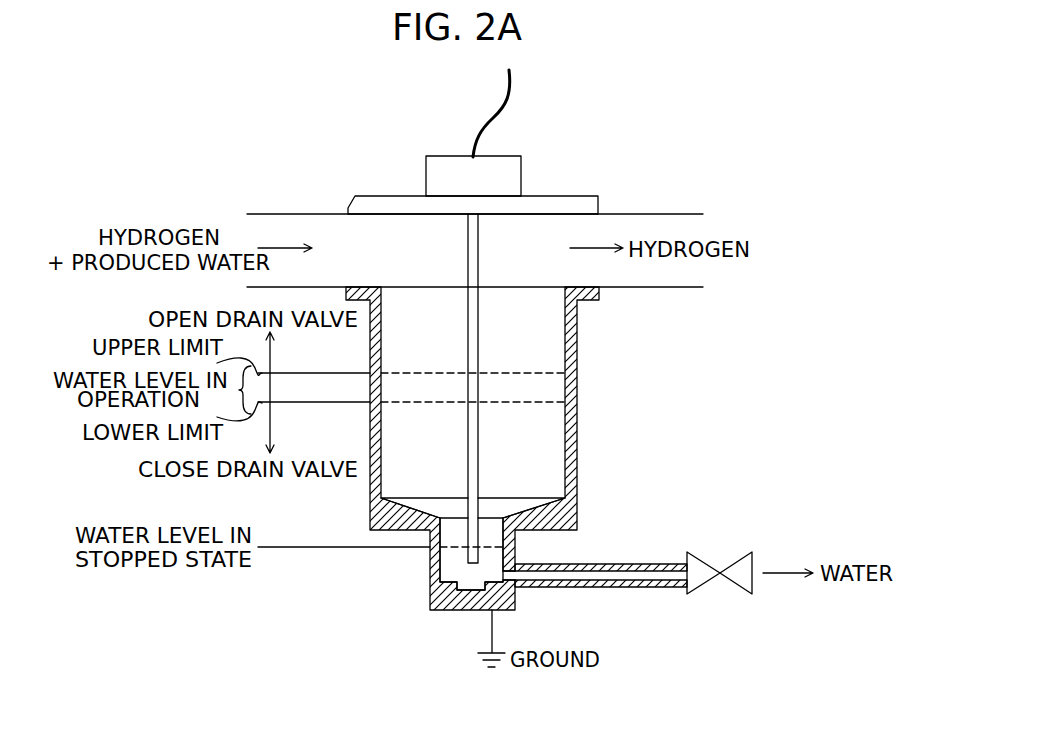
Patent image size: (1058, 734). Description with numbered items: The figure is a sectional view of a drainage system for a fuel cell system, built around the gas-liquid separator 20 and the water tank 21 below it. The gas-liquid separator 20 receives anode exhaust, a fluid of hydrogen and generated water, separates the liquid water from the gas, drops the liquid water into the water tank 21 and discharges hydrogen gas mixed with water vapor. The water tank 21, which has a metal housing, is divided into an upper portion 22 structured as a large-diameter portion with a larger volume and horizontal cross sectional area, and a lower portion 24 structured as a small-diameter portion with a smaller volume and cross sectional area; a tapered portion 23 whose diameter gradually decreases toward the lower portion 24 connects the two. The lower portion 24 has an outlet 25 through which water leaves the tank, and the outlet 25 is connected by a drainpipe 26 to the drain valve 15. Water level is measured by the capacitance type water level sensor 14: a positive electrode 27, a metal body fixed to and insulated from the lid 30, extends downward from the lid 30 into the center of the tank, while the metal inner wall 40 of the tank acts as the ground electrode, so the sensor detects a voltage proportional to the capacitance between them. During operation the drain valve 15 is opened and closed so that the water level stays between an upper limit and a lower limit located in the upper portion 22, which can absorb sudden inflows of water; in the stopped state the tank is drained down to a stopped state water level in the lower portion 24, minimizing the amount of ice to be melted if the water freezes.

The water level sensor 14 is at (524, 178).
The drain valve 15 is at (756, 588).
The gas-liquid separator 20 is at (385, 231).
The water tank 21 is at (580, 347).
The upper portion 22 is at (583, 443).
The tapered portion 23 is at (563, 496).
The lower portion 24 is at (437, 558).
The outlet 25 is at (510, 576).
The drainpipe 26 is at (652, 587).
The positive electrode 27 is at (470, 565).
The lid 30 is at (599, 201).
The inner wall 40 is at (565, 366).